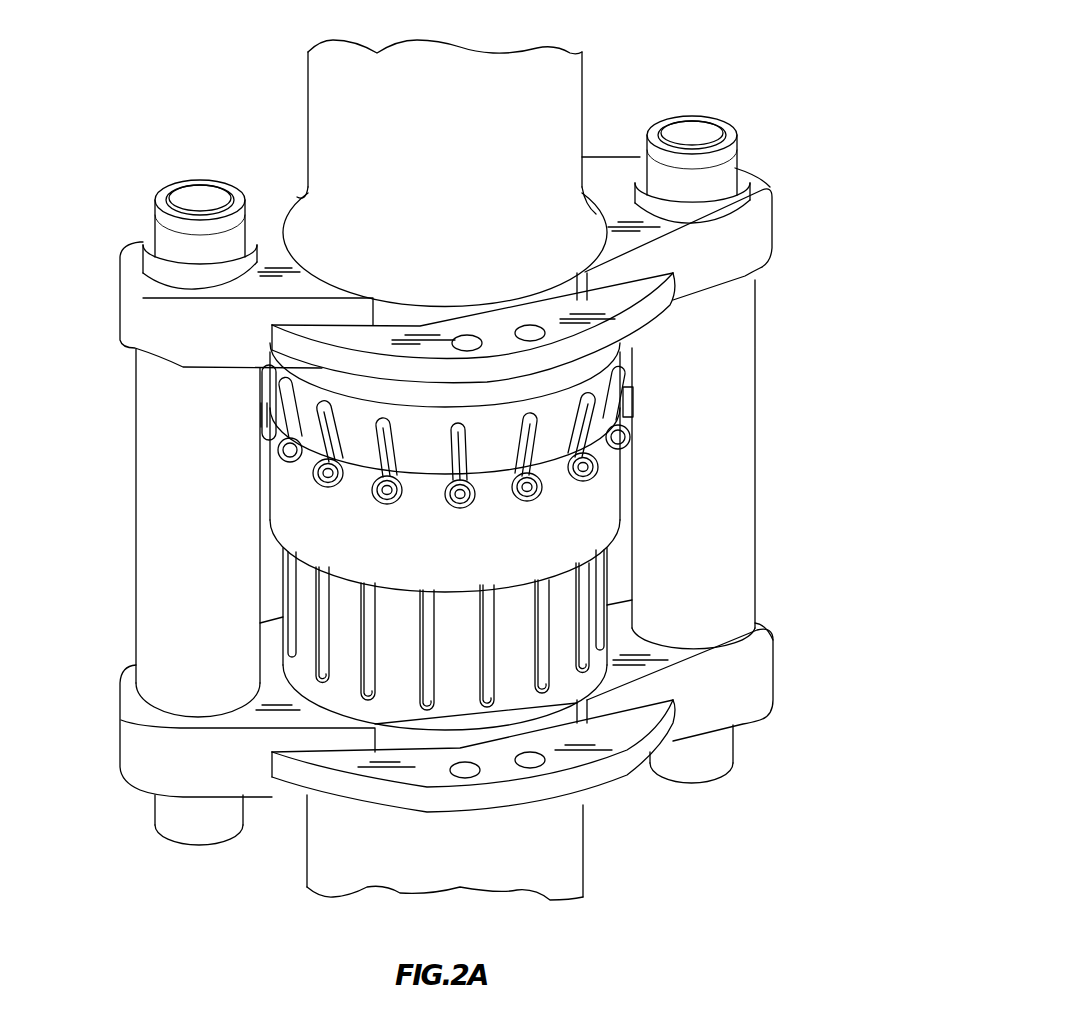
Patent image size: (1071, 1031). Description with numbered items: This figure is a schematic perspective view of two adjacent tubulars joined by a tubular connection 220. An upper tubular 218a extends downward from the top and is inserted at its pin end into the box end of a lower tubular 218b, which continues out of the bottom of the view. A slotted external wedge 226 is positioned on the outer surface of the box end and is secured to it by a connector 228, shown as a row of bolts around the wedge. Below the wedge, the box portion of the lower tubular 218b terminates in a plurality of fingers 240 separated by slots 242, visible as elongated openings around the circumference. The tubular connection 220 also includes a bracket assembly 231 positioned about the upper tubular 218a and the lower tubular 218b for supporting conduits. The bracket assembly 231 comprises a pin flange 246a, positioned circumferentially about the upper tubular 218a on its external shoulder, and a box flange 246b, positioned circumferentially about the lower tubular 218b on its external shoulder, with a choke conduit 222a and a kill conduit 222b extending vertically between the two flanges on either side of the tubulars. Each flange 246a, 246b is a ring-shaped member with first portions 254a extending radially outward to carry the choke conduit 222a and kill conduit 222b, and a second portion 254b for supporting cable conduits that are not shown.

The tubular connection 220 is at (121, 163).
The upper tubular 218a is at (560, 70).
The lower tubular 218b is at (573, 843).
The first portions 254a is at (273, 207).
The second portion 254b is at (380, 368).
The bracket assembly 231 is at (775, 186).
The pin flange 246a is at (773, 253).
The box flange 246b is at (130, 733).
The choke conduit 222a is at (153, 531).
The kill conduit 222b is at (723, 385).
The slotted external wedge 226 is at (620, 470).
The connector 228 is at (462, 506).
The fingers 240 is at (565, 607).
The slots 242 is at (545, 632).